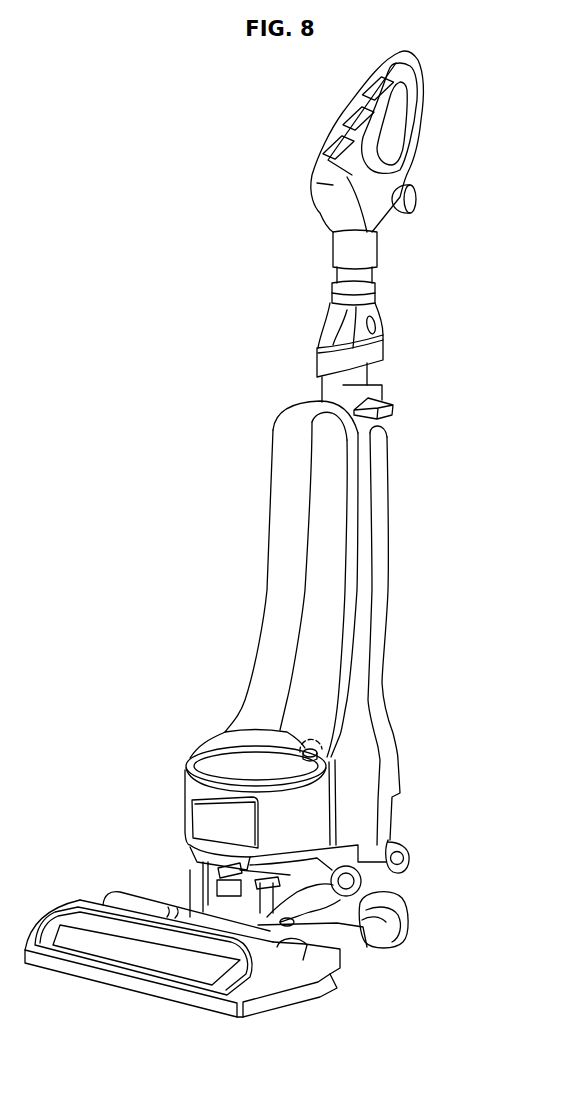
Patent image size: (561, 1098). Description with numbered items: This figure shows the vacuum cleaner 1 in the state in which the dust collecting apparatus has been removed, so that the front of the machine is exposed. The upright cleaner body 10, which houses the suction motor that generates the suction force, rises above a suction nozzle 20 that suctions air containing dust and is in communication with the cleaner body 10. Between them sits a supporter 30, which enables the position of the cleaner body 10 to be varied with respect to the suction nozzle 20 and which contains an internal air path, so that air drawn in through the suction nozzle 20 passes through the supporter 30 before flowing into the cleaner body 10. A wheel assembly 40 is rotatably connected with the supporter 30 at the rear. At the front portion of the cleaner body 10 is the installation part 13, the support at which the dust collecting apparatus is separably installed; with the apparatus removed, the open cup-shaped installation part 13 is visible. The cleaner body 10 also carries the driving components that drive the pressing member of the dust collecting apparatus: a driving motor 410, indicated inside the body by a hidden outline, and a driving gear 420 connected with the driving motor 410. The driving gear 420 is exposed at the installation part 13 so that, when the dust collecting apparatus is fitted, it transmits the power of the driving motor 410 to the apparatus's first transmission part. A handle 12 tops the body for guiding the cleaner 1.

The vacuum cleaner 1 is at (115, 248).
The cleaner body 10 is at (387, 562).
The handle 12 is at (418, 64).
The installation part 13 is at (190, 757).
The suction nozzle 20 is at (92, 997).
The supporter 30 is at (307, 921).
The wheel assembly 40 is at (433, 909).
The driving motor 410 is at (310, 743).
The driving gear 420 is at (232, 772).